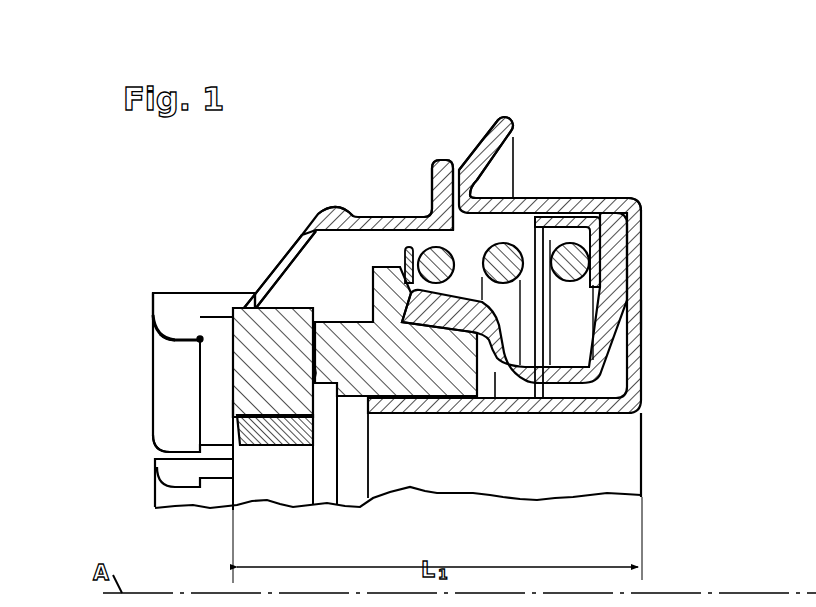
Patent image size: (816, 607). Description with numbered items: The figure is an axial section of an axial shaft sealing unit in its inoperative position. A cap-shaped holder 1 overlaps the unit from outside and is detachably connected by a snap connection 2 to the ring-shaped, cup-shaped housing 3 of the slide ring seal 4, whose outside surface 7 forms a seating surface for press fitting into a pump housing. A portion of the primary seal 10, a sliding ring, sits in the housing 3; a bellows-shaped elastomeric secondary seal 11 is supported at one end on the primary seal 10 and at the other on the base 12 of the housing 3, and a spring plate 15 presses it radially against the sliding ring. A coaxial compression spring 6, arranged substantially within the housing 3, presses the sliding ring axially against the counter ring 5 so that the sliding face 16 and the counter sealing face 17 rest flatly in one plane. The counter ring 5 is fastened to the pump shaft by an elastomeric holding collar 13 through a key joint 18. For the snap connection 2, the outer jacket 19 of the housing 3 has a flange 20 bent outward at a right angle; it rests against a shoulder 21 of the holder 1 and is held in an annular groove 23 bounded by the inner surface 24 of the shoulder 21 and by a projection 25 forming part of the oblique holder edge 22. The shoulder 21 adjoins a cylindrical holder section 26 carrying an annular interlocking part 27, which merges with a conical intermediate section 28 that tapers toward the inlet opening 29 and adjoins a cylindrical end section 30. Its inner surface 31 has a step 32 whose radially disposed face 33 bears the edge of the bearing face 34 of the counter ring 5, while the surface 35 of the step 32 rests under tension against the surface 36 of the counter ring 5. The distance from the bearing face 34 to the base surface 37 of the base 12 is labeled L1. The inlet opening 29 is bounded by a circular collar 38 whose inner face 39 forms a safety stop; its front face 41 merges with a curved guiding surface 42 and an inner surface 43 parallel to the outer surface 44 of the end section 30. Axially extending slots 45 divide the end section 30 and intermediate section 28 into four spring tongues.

The holder 1 is at (307, 221).
The snap connection 2 is at (446, 151).
The housing 3 is at (545, 195).
The slide ring seal 4 is at (608, 197).
The counter ring 5 is at (254, 372).
The compression spring 6 is at (578, 252).
The outside surface 7 is at (583, 204).
The primary seal 10 is at (437, 373).
The secondary seal 11 is at (572, 376).
The base 12 is at (643, 345).
The holding collar 13 is at (262, 447).
The spring plate 15 is at (404, 258).
The sliding face 16 is at (339, 398).
The counter sealing face 17 is at (324, 414).
The key joint 18 is at (279, 446).
The outer jacket 19 is at (606, 206).
The flange 20 is at (471, 189).
The shoulder 21 is at (432, 201).
The holder edge 22 is at (502, 119).
The annular groove 23 is at (457, 168).
The inner surface 24 is at (436, 165).
The projection 25 is at (483, 176).
The cylindrical holder section 26 is at (383, 222).
The interlocking part 27 is at (332, 208).
The conical intermediate section 28 is at (297, 245).
The inlet opening 29 is at (167, 440).
The cylindrical end section 30 is at (203, 305).
The inner surface 31 is at (214, 318).
The step 32 is at (231, 312).
The radially disposed face 33 is at (281, 308).
The bearing face 34 is at (236, 401).
The surface of the step 35 is at (254, 293).
The surface of the counter ring 36 is at (247, 309).
The base surface 37 is at (642, 315).
The circular collar 38 is at (173, 313).
The inner face 39 is at (198, 344).
The front face 41 is at (152, 302).
The curved guiding surface 42 is at (158, 335).
The inner surface 43 is at (163, 342).
The outer surface 44 is at (222, 305).
The axially extending slots 45 is at (163, 458).